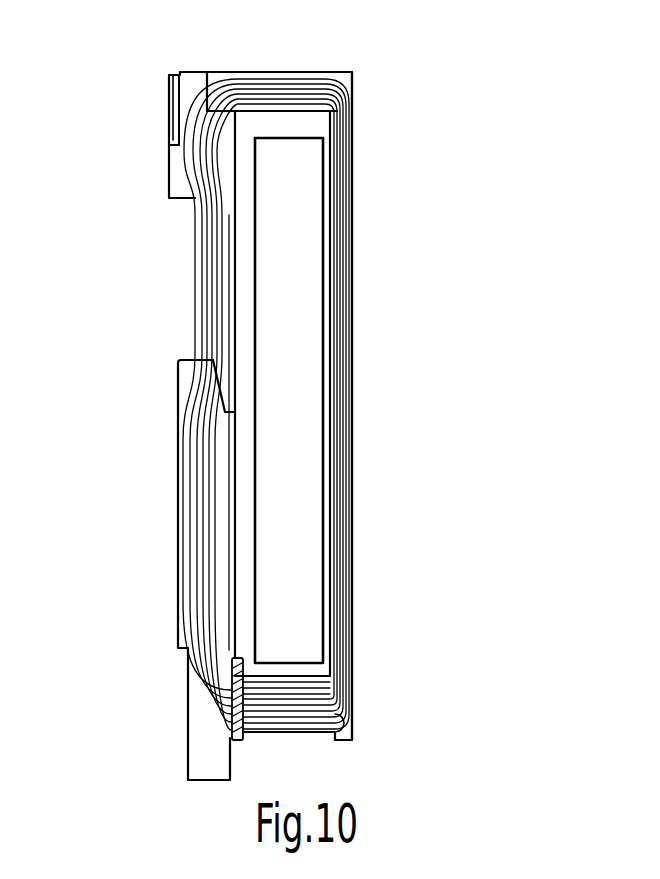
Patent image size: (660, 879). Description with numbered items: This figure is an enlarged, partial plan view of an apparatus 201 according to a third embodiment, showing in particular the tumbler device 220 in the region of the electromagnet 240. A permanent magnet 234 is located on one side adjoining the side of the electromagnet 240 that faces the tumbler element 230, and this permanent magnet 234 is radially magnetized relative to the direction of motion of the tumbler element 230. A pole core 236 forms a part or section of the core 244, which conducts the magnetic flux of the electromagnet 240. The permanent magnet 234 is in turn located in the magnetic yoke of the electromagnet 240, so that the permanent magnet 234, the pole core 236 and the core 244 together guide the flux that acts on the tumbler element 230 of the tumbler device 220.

The apparatus 201 is at (398, 110).
The tumbler device 220 is at (266, 404).
The tumbler element 230 is at (205, 758).
The permanent magnet 234 is at (318, 693).
The pole core 236 is at (178, 183).
The electromagnet 240 is at (298, 437).
The core 244 is at (353, 633).